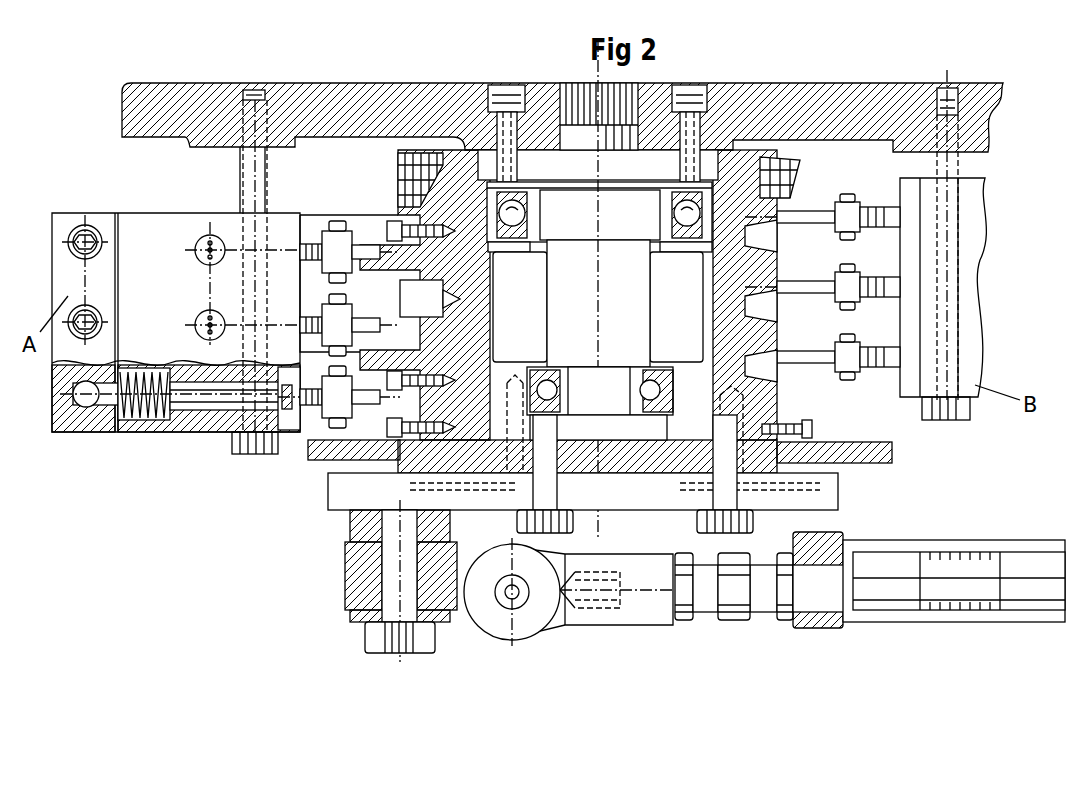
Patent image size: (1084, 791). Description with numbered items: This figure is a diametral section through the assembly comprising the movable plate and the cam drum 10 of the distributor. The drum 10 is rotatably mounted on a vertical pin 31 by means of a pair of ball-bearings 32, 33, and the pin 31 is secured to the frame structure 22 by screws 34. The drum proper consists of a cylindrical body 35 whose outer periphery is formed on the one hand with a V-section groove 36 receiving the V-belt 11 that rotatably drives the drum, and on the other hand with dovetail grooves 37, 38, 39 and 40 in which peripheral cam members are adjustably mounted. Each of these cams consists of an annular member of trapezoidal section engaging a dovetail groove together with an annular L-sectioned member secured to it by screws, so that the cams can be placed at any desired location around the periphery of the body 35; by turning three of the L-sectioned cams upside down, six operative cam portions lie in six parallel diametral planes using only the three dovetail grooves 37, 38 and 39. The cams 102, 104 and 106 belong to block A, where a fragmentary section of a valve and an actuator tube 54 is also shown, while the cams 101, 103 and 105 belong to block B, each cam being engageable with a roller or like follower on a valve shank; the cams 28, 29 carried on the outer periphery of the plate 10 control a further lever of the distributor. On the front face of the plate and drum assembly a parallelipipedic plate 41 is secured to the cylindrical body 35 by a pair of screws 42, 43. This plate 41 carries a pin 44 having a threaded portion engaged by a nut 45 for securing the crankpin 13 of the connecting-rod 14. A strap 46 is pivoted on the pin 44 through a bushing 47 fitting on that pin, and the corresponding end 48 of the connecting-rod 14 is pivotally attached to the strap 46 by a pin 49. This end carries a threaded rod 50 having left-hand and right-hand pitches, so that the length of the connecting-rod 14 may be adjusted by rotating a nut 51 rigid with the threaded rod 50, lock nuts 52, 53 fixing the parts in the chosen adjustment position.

The cam drum 10 is at (391, 474).
The V-belt 11 is at (800, 176).
The crankpin 13 is at (331, 616).
The connecting-rod 14 is at (860, 638).
The frame structure 22 is at (822, 102).
The cam 28 is at (882, 465).
The cam 29 is at (308, 450).
The vertical pin 31 is at (612, 304).
The ball-bearing 32 is at (530, 224).
The ball-bearing 33 is at (535, 367).
The screw 34 is at (512, 85).
The cylindrical body 35 is at (436, 150).
The V-section groove 36 is at (400, 175).
The dovetail groove 37 is at (398, 212).
The dovetail groove 38 is at (420, 300).
The dovetail groove 39 is at (480, 340).
The dovetail groove 40 is at (438, 478).
The parallelipipedic plate 41 is at (345, 508).
The screw 42 is at (560, 530).
The screw 43 is at (700, 519).
The pin 44 is at (420, 612).
The nut 45 is at (385, 648).
The strap 46 is at (345, 556).
The bushing 47 is at (375, 570).
The end of connecting-rod 48 is at (600, 615).
The pin 49 is at (520, 610).
The threaded rod 50 is at (712, 602).
The nut 51 is at (736, 618).
The lock nut 52 is at (690, 616).
The lock nut 53 is at (788, 618).
The actuator tube 54 is at (972, 535).
The cam 101 is at (815, 218).
The cam 102 is at (360, 262).
The cam 103 is at (810, 290).
The cam 104 is at (355, 322).
The cam 105 is at (330, 355).
The cam 106 is at (240, 445).